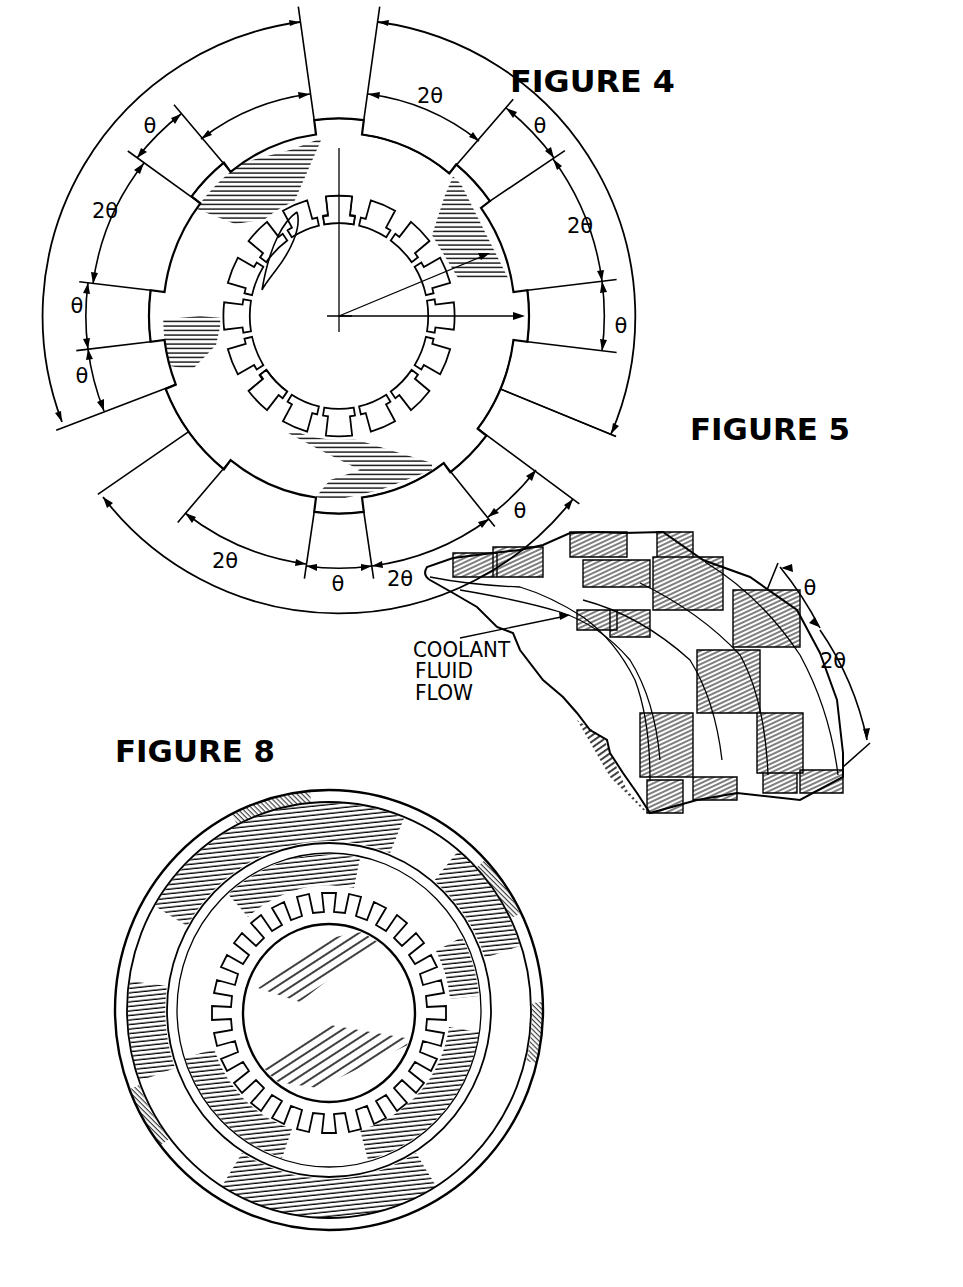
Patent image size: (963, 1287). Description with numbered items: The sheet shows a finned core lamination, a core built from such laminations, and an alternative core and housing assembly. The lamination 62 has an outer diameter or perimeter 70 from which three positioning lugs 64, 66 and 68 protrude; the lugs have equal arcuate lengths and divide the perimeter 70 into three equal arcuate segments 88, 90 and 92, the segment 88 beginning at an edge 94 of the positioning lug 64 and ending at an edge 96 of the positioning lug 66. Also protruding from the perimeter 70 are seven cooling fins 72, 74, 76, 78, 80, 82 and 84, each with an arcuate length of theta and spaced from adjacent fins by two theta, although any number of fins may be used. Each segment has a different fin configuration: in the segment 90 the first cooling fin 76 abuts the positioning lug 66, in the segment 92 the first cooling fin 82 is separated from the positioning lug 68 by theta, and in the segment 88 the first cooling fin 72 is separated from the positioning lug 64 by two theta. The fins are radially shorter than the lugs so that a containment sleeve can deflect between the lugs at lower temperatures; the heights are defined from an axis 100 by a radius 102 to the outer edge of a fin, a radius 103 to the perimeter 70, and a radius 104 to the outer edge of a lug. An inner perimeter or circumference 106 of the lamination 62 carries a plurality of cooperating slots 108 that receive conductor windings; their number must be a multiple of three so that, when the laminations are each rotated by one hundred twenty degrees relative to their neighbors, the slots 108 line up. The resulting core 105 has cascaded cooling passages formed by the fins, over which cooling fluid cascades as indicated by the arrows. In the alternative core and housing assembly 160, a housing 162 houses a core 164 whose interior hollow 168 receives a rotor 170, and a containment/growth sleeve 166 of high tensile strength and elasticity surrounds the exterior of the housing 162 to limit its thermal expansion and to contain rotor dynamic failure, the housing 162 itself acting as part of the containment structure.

In FIG. 4, the lamination 62 is at (558, 401).
In FIG. 4, the positioning lug 64 is at (335, 118).
In FIG. 4, the positioning lug 66 is at (500, 428).
In FIG. 4, the positioning lug 68 is at (164, 415).
In FIG. 4, the outer diameter or perimeter 70 is at (402, 489).
In FIG. 4, the cooling fin 72 is at (482, 182).
In FIG. 4, the cooling fin 74 is at (532, 318).
In FIG. 4, the cooling fin 76 is at (466, 461).
In FIG. 4, the cooling fin 78 is at (343, 512).
In FIG. 4, the cooling fin 80 is at (201, 453).
In FIG. 4, the cooling fin 82 is at (149, 313).
In FIG. 4, the cooling fin 84 is at (202, 178).
In FIG. 4, the arcuate segment 88 is at (602, 172).
In FIG. 4, the arcuate segment 90 is at (232, 597).
In FIG. 4, the arcuate segment 92 is at (113, 118).
In FIG. 4, the edge 94 is at (370, 132).
In FIG. 4, the edge 96 is at (508, 387).
In FIG. 4, the axis 100 is at (341, 320).
In FIG. 4, the radius 102 is at (401, 318).
In FIG. 4, the radius 103 is at (413, 267).
In FIG. 4, the radius 104 is at (340, 230).
In FIG. 5, the core 105 is at (648, 517).
In FIG. 4, the inner perimeter or circumference 106 is at (263, 364).
In FIG. 4, the slots 108 is at (268, 237).
In FIG. 8, the core and housing assembly 160 is at (565, 947).
In FIG. 8, the housing 162 is at (418, 1170).
In FIG. 8, the core 164 is at (198, 1043).
In FIG. 8, the containment/growth sleeve 166 is at (512, 1112).
In FIG. 8, the interior hollow 168 is at (432, 1017).
In FIG. 8, the rotor 170 is at (313, 1067).